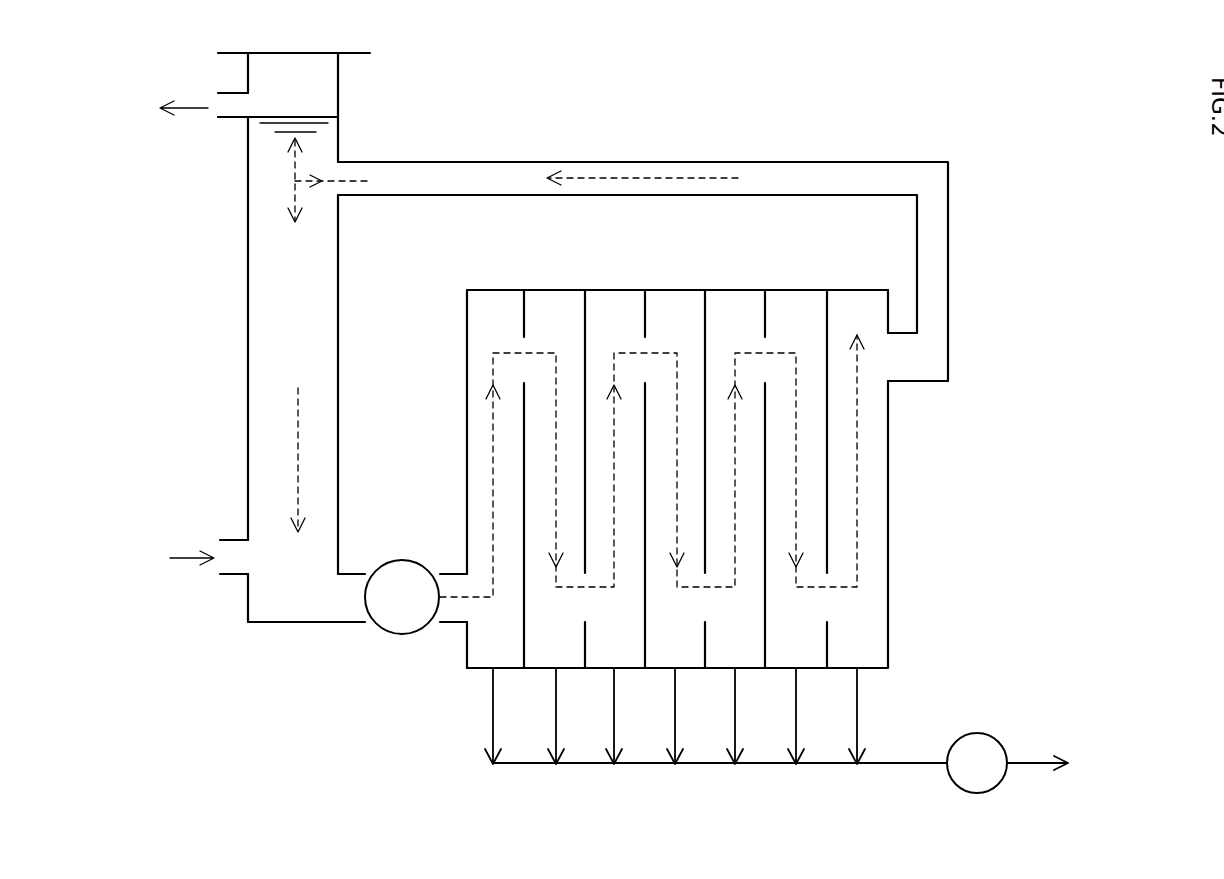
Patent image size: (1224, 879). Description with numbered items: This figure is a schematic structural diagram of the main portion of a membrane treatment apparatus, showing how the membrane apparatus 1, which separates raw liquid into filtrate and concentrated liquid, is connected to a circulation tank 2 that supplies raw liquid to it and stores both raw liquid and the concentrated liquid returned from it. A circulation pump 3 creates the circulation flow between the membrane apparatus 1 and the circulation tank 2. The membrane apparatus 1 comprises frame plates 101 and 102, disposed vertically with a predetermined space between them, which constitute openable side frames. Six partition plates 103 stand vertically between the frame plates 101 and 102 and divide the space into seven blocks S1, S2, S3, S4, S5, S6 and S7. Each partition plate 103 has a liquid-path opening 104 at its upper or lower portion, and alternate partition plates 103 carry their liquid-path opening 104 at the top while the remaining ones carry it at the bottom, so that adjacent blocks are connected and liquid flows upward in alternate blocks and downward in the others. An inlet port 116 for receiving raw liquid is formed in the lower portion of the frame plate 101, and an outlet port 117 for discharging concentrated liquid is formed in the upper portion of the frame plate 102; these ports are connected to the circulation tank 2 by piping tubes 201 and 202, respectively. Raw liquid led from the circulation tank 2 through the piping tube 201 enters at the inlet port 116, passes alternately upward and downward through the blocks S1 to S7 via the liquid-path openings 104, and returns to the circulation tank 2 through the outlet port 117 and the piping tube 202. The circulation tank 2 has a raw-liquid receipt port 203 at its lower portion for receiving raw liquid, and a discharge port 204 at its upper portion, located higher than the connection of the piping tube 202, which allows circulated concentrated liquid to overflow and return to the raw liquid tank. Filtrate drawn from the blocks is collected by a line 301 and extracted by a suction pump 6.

The membrane apparatus 1 is at (719, 478).
The circulation tank 2 is at (228, 327).
The circulation pump 3 is at (385, 625).
The suction pump 6 is at (980, 733).
The frame plate 101 is at (466, 332).
The frame plate 102 is at (890, 443).
The partition plate 103 is at (733, 344).
The liquid-path opening 104 is at (558, 334).
The inlet port 116 is at (455, 600).
The outlet port 117 is at (920, 350).
The piping tube 201 is at (358, 572).
The piping tube 202 is at (675, 160).
The raw-liquid receipt port 203 is at (248, 560).
The discharge port 204 is at (236, 107).
The discharge pipe 301 is at (578, 770).
The block S1 is at (490, 298).
The block S2 is at (547, 298).
The block S3 is at (605, 298).
The block S4 is at (663, 298).
The block S5 is at (722, 298).
The block S6 is at (788, 298).
The block S7 is at (849, 298).